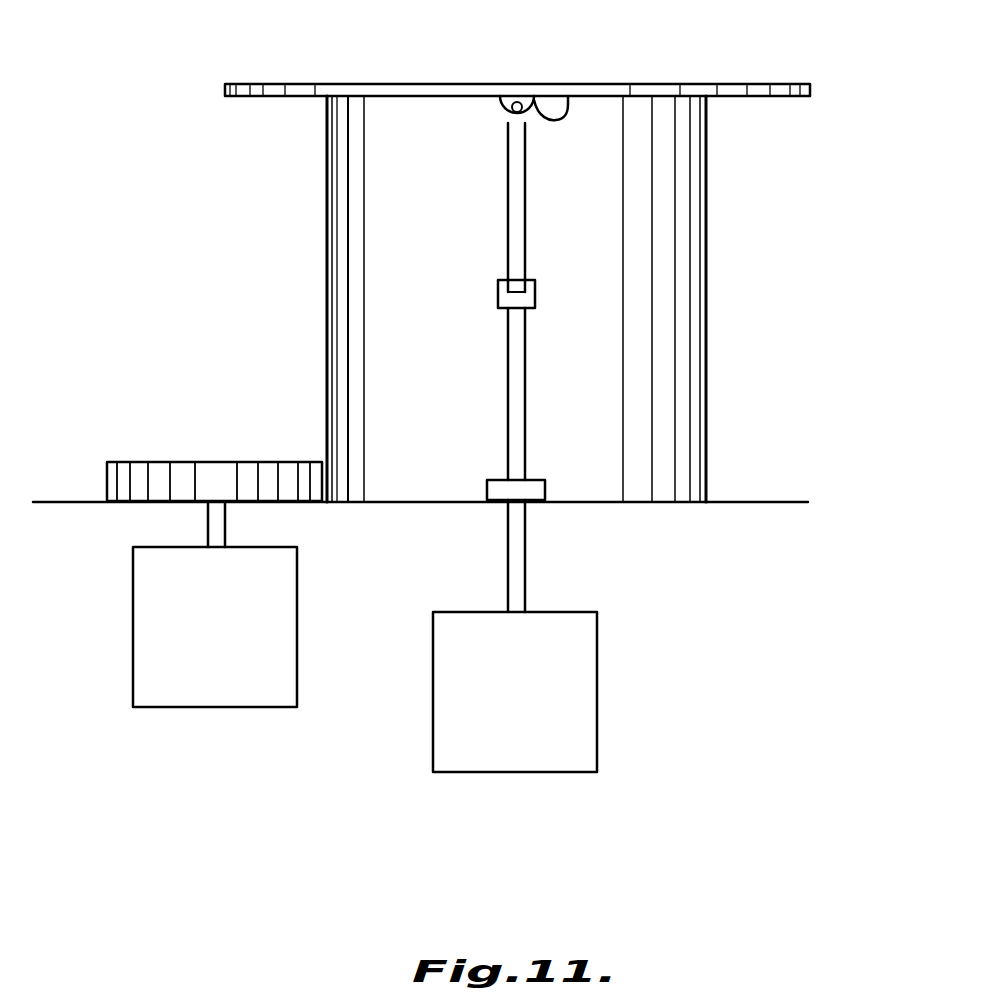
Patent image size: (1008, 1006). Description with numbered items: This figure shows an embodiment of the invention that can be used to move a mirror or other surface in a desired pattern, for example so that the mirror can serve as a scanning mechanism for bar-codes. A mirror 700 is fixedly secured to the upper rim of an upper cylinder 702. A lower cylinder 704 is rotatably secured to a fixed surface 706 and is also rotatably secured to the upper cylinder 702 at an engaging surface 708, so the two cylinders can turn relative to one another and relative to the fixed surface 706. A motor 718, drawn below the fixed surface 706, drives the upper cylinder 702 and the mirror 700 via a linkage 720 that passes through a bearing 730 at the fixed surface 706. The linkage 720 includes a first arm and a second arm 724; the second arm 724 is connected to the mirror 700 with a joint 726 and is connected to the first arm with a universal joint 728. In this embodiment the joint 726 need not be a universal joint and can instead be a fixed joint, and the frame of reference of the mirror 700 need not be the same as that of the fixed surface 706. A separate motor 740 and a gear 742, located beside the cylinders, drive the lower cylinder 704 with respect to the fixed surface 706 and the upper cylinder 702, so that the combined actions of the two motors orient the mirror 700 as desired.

The mirror 700 is at (708, 85).
The upper cylinder 702 is at (708, 157).
The lower cylinder 704 is at (525, 388).
The fixed surface 706 is at (895, 562).
The engaging surface 708 is at (327, 240).
The motor 718 is at (597, 710).
The linkage 720 is at (503, 377).
The second arm 724 is at (510, 193).
The joint 726 is at (560, 118).
The universal joint 728 is at (535, 290).
The bearing 730 is at (545, 487).
The motor 740 is at (138, 627).
The gear 742 is at (193, 462).